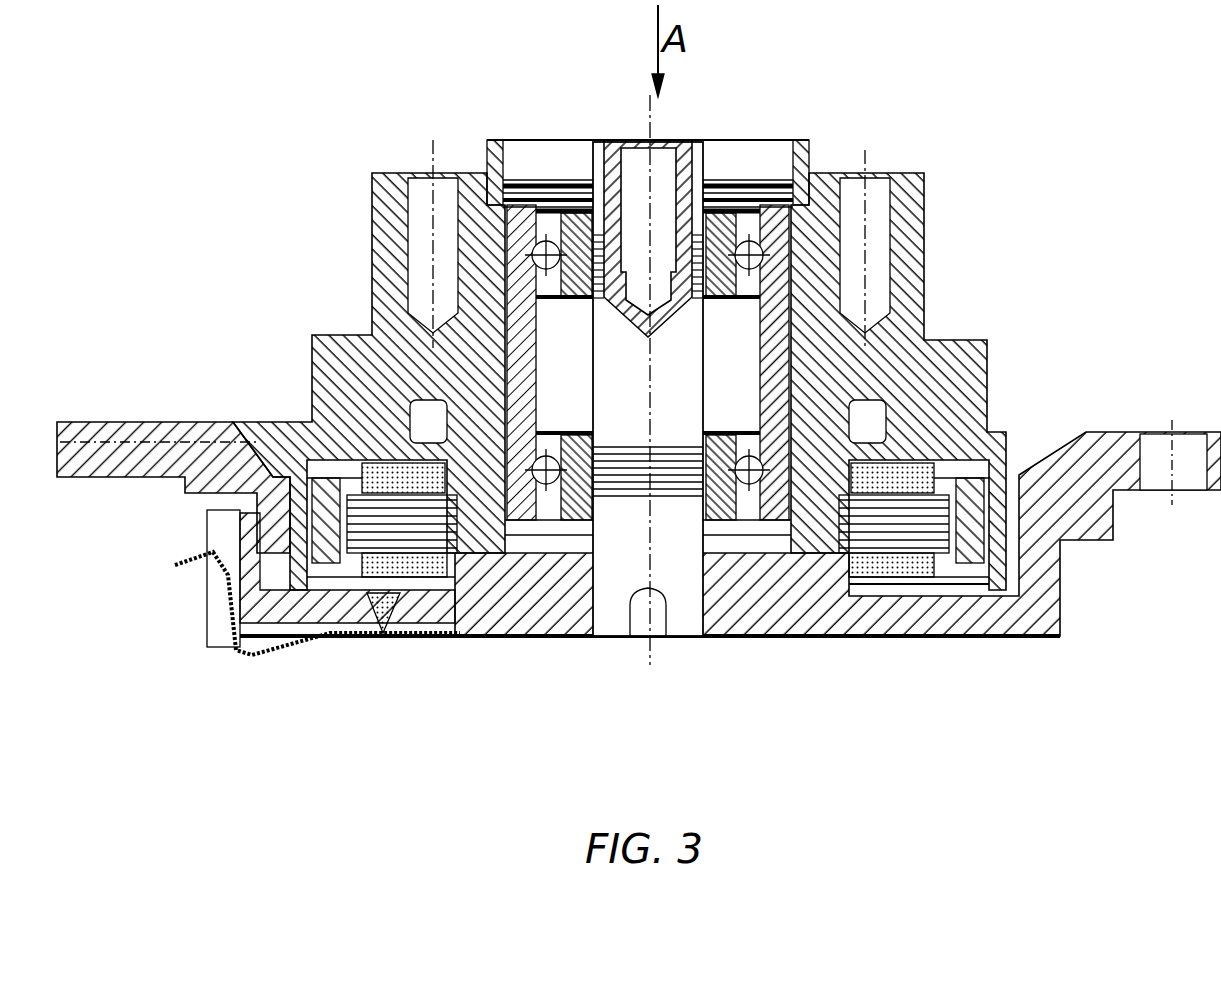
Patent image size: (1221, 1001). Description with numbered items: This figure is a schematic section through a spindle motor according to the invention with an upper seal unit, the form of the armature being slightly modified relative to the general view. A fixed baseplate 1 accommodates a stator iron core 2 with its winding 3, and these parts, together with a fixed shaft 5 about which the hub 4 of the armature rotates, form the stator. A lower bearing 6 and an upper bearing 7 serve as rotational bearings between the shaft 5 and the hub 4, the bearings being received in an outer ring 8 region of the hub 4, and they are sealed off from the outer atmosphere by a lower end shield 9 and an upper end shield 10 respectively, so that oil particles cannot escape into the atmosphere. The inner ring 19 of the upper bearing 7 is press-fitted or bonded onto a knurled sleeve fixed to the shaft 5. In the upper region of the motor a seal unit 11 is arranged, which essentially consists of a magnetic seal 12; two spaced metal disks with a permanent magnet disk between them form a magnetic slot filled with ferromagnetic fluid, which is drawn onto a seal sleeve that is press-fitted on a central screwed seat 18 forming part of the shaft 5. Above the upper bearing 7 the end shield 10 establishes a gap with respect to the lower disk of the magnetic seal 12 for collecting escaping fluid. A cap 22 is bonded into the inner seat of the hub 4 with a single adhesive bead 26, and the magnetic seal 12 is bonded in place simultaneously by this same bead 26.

The baseplate 1 is at (566, 597).
The stator iron core 2 is at (448, 523).
The winding 3 is at (420, 577).
The hub 4 is at (392, 197).
The shaft 5 is at (691, 632).
The lower bearing 6 is at (763, 523).
The upper bearing 7 is at (806, 195).
The outer ring 8 is at (785, 355).
The lower end shield 9 is at (747, 520).
The upper end shield 10 is at (733, 190).
The seal unit 11 is at (781, 130).
The magnetic seal 12 is at (784, 166).
The screwed seat 18 is at (660, 177).
The inner ring of bearing 19 is at (580, 187).
The cap 22 is at (540, 190).
The adhesive bead 26 is at (503, 190).